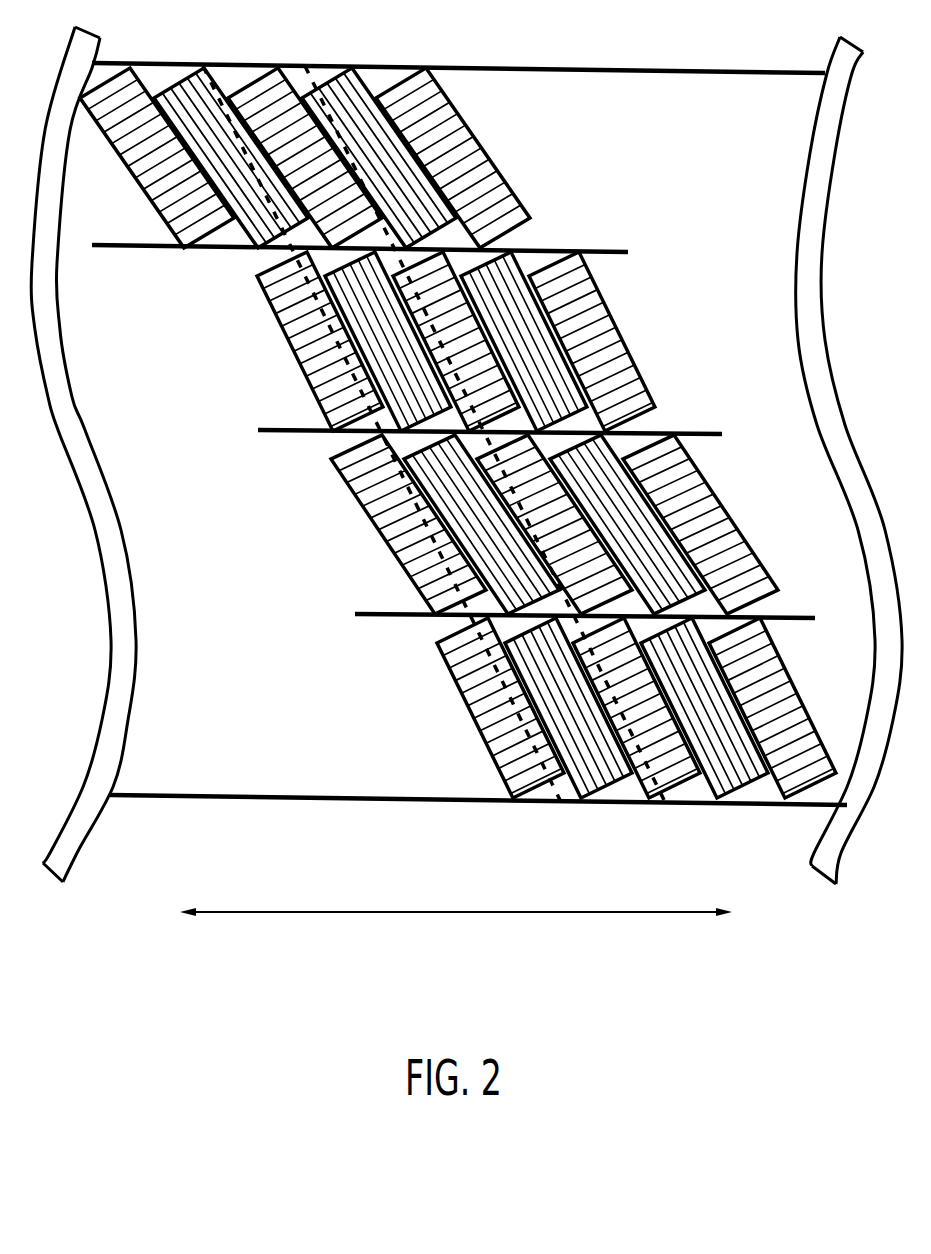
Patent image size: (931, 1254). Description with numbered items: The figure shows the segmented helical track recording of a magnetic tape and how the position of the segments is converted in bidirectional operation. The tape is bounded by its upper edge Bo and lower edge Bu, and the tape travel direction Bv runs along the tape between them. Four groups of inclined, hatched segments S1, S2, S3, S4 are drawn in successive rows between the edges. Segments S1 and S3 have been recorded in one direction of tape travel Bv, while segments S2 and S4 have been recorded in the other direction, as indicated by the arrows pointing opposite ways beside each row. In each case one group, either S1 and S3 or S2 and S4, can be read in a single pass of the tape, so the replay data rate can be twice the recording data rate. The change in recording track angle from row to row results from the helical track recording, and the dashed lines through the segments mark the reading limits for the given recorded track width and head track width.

The upper web edge Bo is at (458, 41).
The lower web edge Bu is at (478, 819).
The direction of tape travel Bv is at (456, 932).
The segment S1 is at (447, 738).
The segment S2 is at (330, 553).
The segment S3 is at (252, 372).
The segment S4 is at (548, 188).